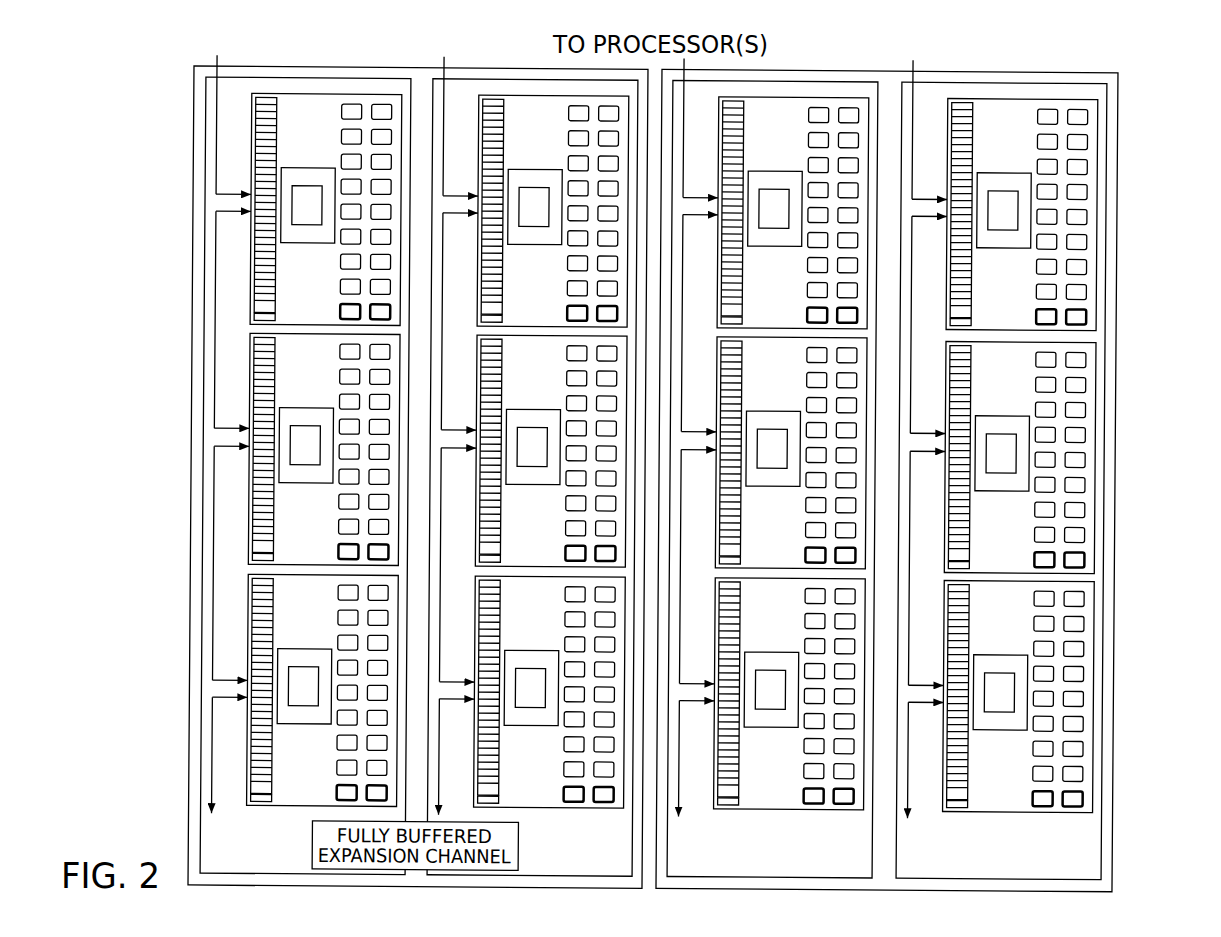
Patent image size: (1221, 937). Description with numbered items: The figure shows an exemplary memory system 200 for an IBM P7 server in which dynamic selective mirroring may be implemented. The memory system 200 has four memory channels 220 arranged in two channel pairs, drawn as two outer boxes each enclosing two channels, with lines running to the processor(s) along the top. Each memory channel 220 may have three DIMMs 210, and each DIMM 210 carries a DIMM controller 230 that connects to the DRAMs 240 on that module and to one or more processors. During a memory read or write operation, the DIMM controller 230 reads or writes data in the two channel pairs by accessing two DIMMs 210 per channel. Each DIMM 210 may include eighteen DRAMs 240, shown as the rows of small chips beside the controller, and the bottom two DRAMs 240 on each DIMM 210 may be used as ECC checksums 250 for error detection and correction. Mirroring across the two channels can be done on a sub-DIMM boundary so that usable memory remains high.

The memory system 200 is at (183, 80).
The DIMM 210 is at (1007, 393).
The memory channel 220 is at (206, 203).
The DIMM controller 230 is at (1020, 482).
The DRAM 240 is at (1083, 148).
The ECC checksum 250 is at (617, 817).